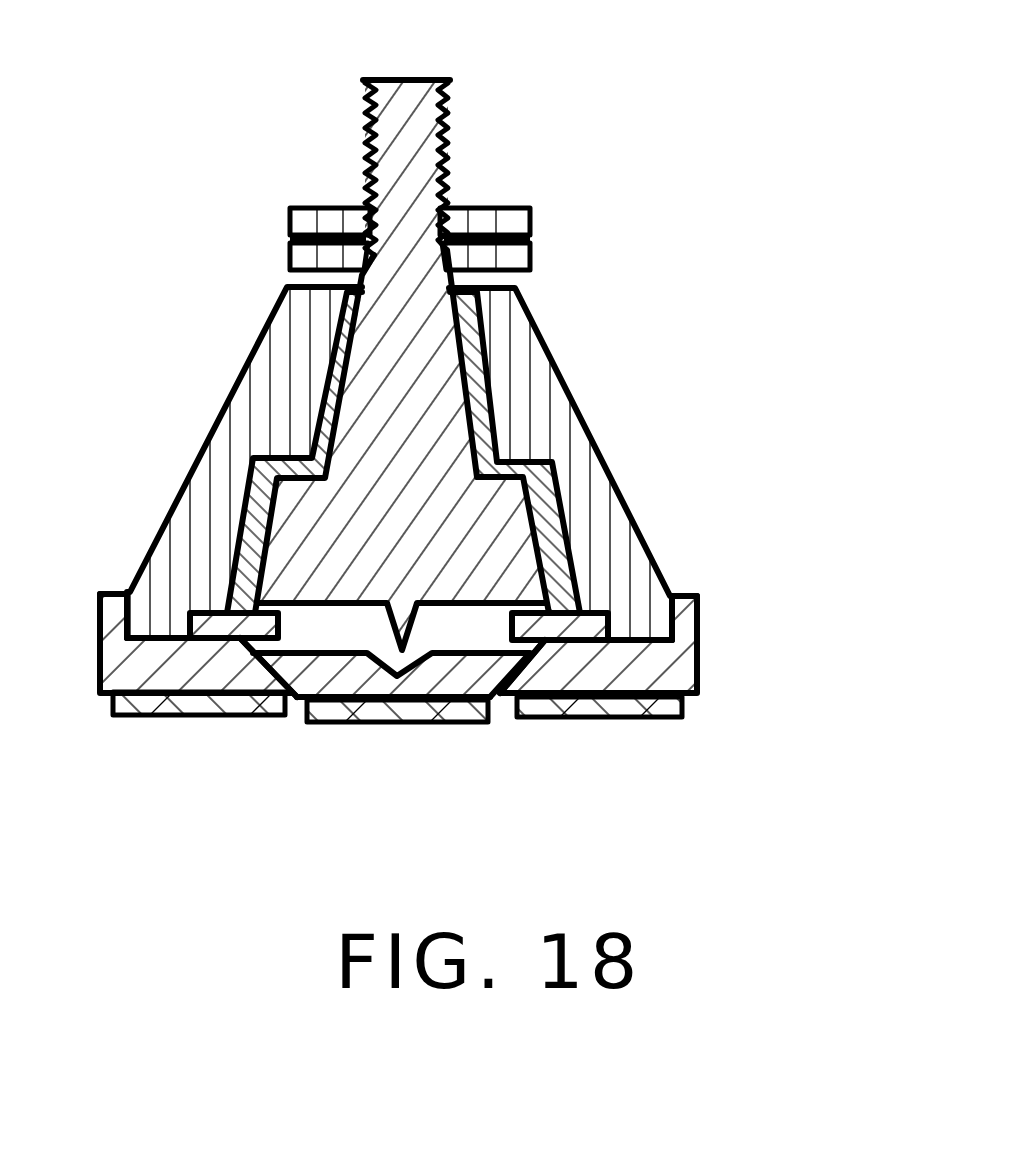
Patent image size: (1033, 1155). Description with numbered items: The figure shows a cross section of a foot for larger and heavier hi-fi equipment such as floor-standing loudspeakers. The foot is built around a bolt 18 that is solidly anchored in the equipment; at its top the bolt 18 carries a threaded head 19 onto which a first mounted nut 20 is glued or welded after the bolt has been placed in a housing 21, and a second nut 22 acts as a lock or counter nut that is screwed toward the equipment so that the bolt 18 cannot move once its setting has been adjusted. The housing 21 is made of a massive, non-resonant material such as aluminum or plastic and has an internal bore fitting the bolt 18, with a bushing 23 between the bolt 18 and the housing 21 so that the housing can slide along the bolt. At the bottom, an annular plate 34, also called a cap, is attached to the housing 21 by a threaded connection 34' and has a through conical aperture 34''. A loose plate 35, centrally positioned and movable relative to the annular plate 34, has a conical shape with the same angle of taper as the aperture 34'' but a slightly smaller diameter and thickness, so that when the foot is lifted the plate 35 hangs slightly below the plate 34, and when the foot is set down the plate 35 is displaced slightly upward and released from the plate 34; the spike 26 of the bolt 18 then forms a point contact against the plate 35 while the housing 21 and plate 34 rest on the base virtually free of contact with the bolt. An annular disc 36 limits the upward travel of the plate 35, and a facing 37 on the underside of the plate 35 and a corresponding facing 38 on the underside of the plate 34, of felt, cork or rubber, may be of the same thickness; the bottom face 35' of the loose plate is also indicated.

The bolt 18 is at (385, 380).
The threaded head 19 is at (392, 136).
The first mounted nut 20 is at (497, 260).
The housing 21 is at (535, 415).
The second nut 22 is at (500, 228).
The bushing 23 is at (560, 497).
The tip or spike of the bolt 26 is at (415, 645).
The annular plate 34 is at (491, 645).
The threaded connection 34' is at (491, 596).
The conical aperture 34'' is at (169, 762).
The plate 35 is at (459, 743).
The insert bottom face 35' is at (393, 772).
The annular disc 36 is at (595, 610).
The facing 37 is at (340, 722).
The facing 38 is at (597, 703).